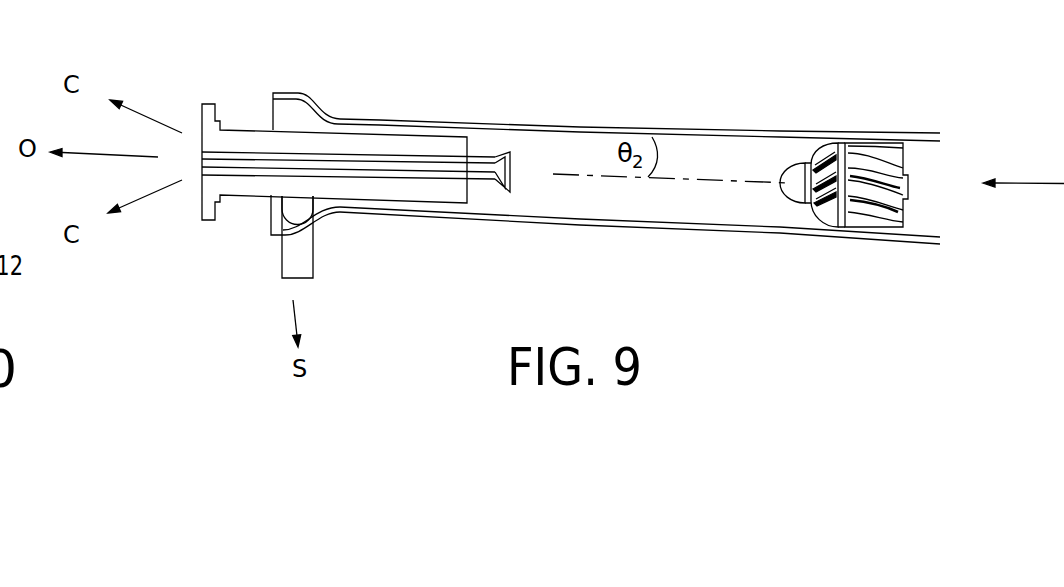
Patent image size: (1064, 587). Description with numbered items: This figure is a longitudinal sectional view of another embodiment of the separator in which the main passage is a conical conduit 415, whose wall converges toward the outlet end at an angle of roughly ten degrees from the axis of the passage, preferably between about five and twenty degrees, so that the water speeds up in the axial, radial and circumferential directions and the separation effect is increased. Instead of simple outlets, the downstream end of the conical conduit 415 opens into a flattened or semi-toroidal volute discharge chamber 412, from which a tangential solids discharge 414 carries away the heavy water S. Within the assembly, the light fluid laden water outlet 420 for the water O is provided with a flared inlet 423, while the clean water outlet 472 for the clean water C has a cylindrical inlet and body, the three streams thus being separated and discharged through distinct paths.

The volute discharge chamber 412 is at (303, 98).
The tangential solids discharge 414 is at (280, 255).
The conical conduit 415 is at (582, 127).
The light fluid laden water outlet 420 is at (447, 182).
The flared inlet 423 is at (510, 192).
The clean water outlet 472 is at (390, 197).